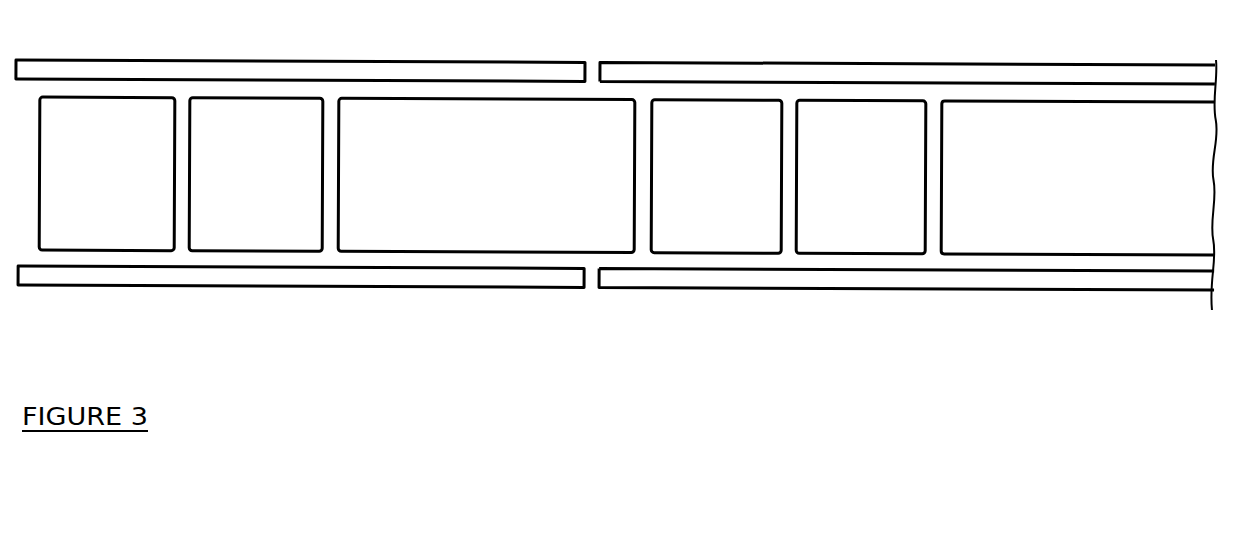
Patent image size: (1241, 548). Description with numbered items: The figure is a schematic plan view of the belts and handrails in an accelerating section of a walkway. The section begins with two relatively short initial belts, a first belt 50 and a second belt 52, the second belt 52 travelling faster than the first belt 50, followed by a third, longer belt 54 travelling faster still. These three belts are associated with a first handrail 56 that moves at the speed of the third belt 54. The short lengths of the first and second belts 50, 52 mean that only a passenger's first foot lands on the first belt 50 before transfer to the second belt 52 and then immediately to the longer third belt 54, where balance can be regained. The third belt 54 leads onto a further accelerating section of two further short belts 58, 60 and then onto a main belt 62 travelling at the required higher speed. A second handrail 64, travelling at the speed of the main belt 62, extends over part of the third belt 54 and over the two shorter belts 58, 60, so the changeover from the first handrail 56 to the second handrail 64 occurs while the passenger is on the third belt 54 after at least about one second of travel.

The first belt 50 is at (124, 188).
The second belt 52 is at (273, 188).
The third belt 54 is at (504, 188).
The handrail 56 is at (95, 60).
The further short belt 58 is at (734, 188).
The further short belt 60 is at (878, 188).
The main belt 62 is at (1098, 188).
The second handrail 64 is at (998, 62).